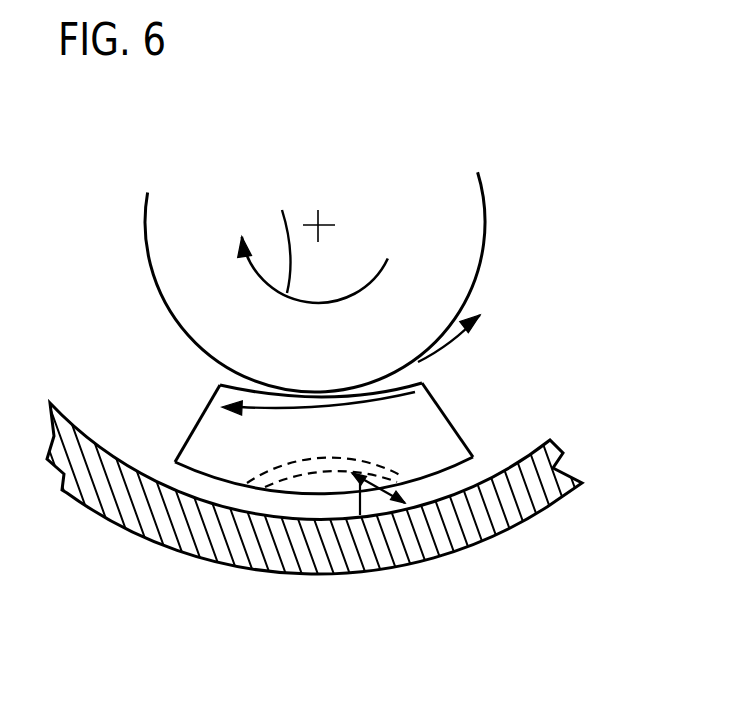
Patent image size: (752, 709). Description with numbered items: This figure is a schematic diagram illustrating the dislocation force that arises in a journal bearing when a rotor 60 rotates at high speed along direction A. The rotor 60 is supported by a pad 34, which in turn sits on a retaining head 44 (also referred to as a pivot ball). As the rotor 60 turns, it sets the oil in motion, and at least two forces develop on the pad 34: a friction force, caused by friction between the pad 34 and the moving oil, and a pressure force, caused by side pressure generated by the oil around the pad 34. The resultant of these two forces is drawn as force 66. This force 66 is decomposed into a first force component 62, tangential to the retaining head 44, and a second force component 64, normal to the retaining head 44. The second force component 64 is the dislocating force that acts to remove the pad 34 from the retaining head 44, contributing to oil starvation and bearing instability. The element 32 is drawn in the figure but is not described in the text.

The platen 32 is at (542, 503).
The pad 34 is at (223, 443).
The retaining head 44 is at (268, 502).
The rotor 60 is at (453, 242).
The first force component 62 is at (375, 475).
The second force component 64 is at (413, 505).
The force 66 is at (350, 507).